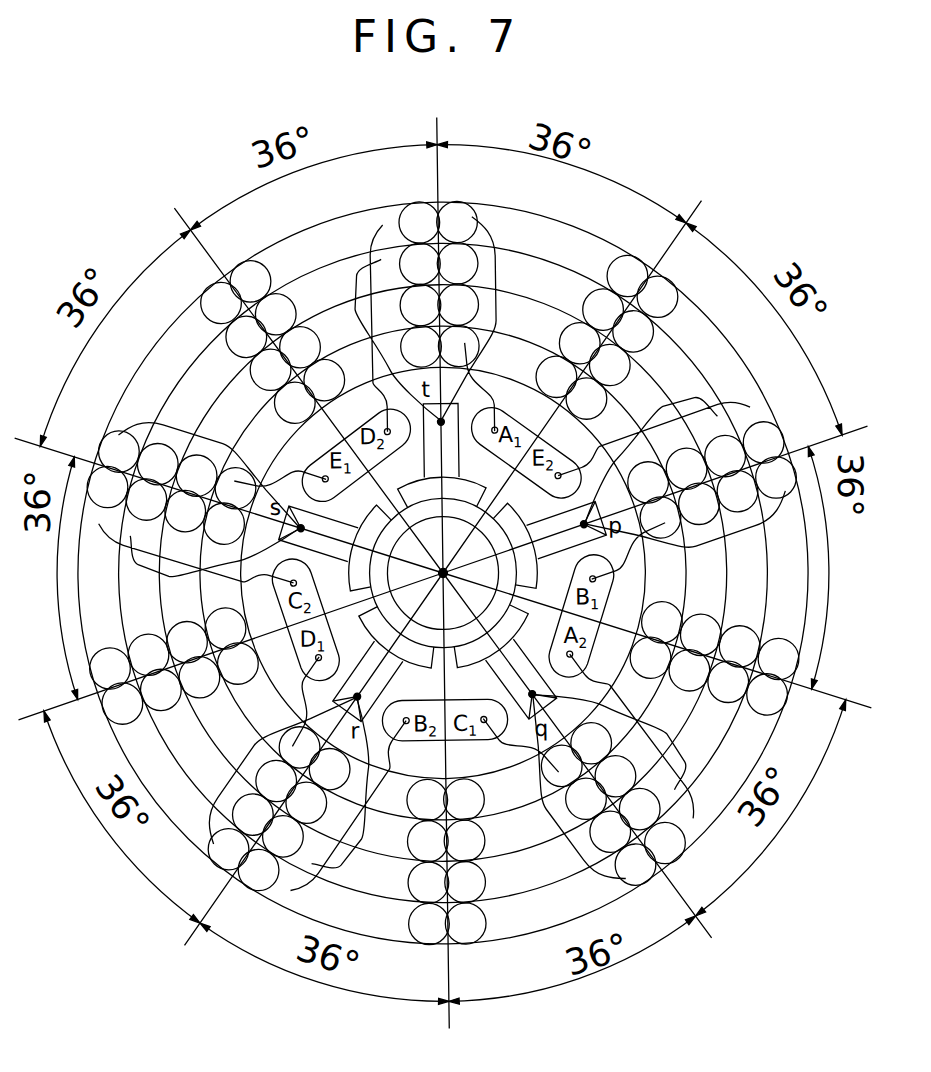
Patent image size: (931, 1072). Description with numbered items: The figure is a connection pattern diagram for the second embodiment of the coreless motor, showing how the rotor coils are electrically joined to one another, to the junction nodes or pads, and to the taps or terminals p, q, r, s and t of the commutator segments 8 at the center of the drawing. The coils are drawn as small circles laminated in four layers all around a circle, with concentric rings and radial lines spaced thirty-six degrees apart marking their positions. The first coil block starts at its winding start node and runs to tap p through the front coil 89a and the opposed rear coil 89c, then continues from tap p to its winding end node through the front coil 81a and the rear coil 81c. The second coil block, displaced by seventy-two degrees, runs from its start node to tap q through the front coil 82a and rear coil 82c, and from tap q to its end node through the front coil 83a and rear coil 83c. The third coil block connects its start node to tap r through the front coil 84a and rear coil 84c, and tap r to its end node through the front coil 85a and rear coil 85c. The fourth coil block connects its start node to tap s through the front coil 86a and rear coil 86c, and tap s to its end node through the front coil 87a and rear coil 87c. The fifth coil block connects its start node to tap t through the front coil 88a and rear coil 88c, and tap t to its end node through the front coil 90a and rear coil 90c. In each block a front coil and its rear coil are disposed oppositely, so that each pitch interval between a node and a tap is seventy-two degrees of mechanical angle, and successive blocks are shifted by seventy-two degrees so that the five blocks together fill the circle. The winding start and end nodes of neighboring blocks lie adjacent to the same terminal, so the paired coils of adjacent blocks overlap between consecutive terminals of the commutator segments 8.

The commutator segments 8 is at (372, 520).
The front coil 81a is at (625, 631).
The rear coil 81c is at (260, 516).
The front coil 82a is at (657, 640).
The rear coil 82c is at (229, 506).
The front coil 83a is at (434, 804).
The rear coil 83c is at (452, 341).
The front coil 84a is at (435, 842).
The rear coil 84c is at (451, 304).
The front coil 85a is at (211, 640).
The rear coil 85c is at (674, 505).
The front coil 86a is at (180, 650).
The rear coil 86c is at (706, 494).
The front coil 87a is at (288, 364).
The rear coil 87c is at (597, 782).
The front coil 88a is at (269, 337).
The rear coil 88c is at (616, 808).
The front coil 89a is at (553, 414).
The rear coil 89c is at (332, 732).
The front coil 90a is at (610, 332).
The rear coil 90c is at (276, 813).